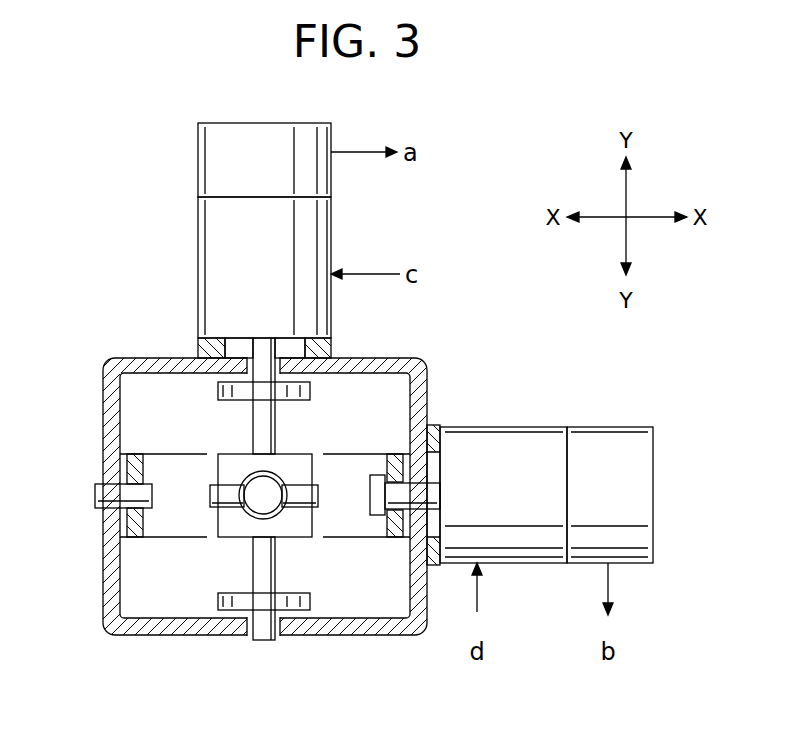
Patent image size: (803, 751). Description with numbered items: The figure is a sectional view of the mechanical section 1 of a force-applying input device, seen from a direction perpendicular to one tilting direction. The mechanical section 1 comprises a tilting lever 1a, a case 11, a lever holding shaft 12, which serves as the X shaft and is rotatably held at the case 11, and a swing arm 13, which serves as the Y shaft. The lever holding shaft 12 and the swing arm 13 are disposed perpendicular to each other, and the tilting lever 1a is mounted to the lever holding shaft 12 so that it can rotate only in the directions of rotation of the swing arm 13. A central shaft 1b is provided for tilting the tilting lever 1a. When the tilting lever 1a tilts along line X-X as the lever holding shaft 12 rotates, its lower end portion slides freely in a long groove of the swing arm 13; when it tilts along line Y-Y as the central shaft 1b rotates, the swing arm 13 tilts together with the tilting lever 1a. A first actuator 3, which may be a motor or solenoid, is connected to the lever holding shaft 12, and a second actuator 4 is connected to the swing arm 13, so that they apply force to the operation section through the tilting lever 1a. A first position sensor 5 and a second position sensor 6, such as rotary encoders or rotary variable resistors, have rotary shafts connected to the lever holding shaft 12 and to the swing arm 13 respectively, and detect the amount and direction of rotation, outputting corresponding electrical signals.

The mechanical section 1 is at (433, 395).
The tilting lever 1a is at (263, 493).
The central shaft 1b is at (318, 495).
The first actuator 3 is at (216, 243).
The second actuator 4 is at (516, 458).
The first position sensor 5 is at (216, 157).
The second position sensor 6 is at (604, 458).
The case 11 is at (103, 420).
The lever holding shaft 12 is at (250, 558).
The swing arm 13 is at (168, 538).